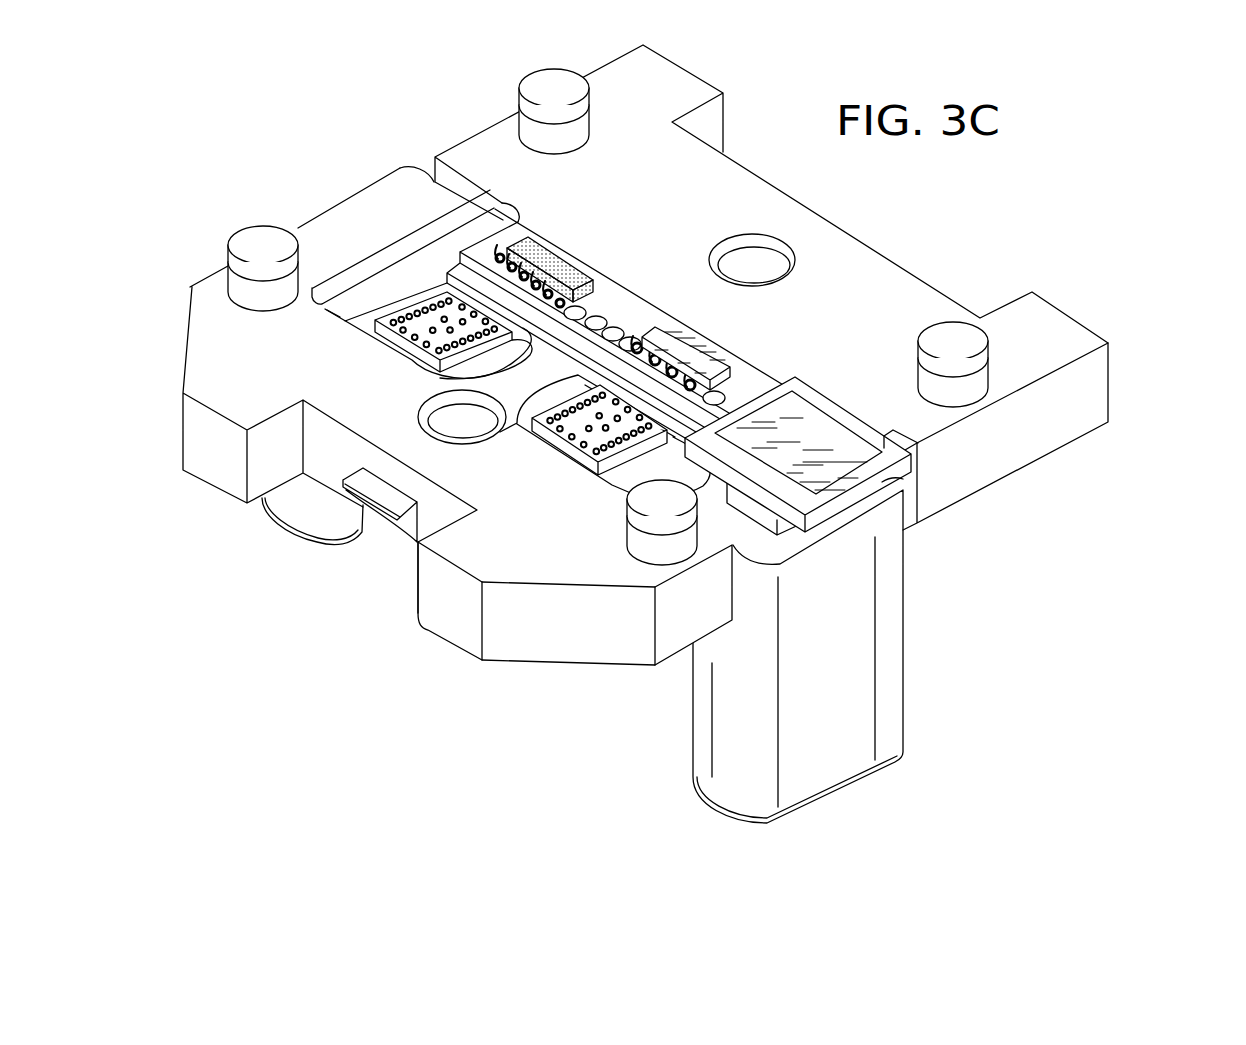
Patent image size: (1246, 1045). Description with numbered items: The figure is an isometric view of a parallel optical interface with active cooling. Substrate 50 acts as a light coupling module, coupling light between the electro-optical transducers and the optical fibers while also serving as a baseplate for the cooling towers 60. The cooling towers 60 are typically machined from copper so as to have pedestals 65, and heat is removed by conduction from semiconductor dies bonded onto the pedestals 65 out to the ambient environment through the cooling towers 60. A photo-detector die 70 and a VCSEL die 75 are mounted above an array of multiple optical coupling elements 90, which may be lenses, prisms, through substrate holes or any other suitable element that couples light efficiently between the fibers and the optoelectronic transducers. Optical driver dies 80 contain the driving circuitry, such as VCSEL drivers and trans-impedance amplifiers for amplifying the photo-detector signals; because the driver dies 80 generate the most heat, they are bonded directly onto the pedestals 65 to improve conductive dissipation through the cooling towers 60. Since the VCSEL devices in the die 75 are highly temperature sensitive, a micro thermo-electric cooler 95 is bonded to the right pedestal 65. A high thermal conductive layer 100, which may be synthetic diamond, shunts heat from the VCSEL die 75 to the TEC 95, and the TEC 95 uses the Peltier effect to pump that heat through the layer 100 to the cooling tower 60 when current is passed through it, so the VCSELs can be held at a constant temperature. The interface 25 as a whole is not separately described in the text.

The tray 25 is at (1055, 323).
The substrate 50 is at (1087, 398).
The cooling tower 60 is at (897, 693).
The pedestal 65 is at (392, 280).
The photo-detector die 70 is at (555, 249).
The VCSEL die 75 is at (730, 347).
The optical driver die 80 is at (423, 330).
The optical coupling element 90 is at (613, 318).
The micro thermo-electric cooler 95 is at (905, 480).
The high thermal conductive layer 100 is at (757, 389).